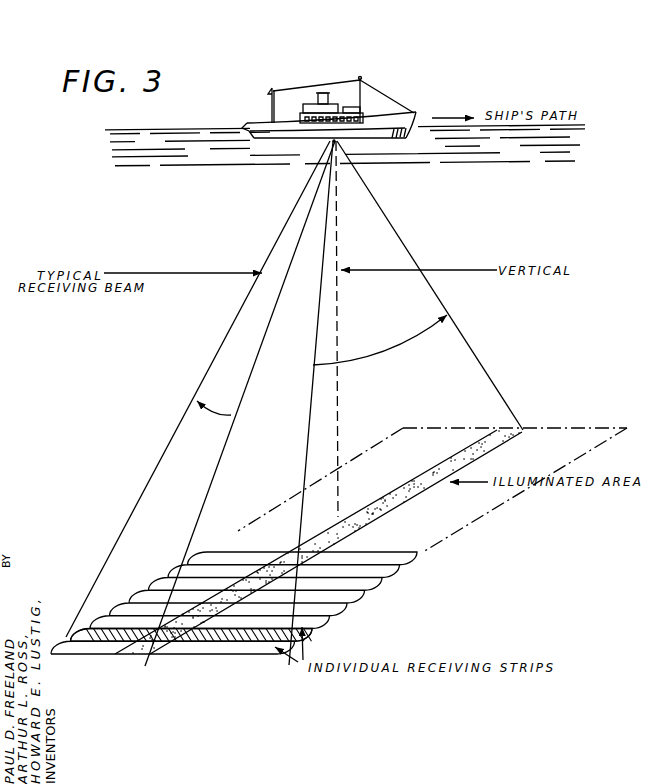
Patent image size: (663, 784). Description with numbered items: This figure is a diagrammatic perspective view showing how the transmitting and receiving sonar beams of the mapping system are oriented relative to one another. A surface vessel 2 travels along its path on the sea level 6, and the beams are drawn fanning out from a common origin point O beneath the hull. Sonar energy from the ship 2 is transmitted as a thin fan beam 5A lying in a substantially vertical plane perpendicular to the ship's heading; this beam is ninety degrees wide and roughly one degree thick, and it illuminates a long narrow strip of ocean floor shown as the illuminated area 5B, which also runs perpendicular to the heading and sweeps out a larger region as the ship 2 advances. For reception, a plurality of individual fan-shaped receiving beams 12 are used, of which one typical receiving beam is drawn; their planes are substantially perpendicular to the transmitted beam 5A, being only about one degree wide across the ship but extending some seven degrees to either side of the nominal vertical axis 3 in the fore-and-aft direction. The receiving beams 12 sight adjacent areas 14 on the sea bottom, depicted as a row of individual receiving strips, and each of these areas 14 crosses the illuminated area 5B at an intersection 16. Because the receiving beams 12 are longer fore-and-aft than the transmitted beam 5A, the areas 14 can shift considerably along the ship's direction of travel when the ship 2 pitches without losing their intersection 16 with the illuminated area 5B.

The surface vessel 2 is at (397, 116).
The sea level 6 is at (194, 131).
The sound source point O is at (338, 144).
The nominal vertical axis 3 is at (338, 336).
The fan beam 5A is at (313, 365).
The illuminated area 5B is at (524, 428).
The receiving beams 12 is at (305, 433).
The adjacent areas 14 is at (234, 617).
The intersection 16 is at (198, 628).